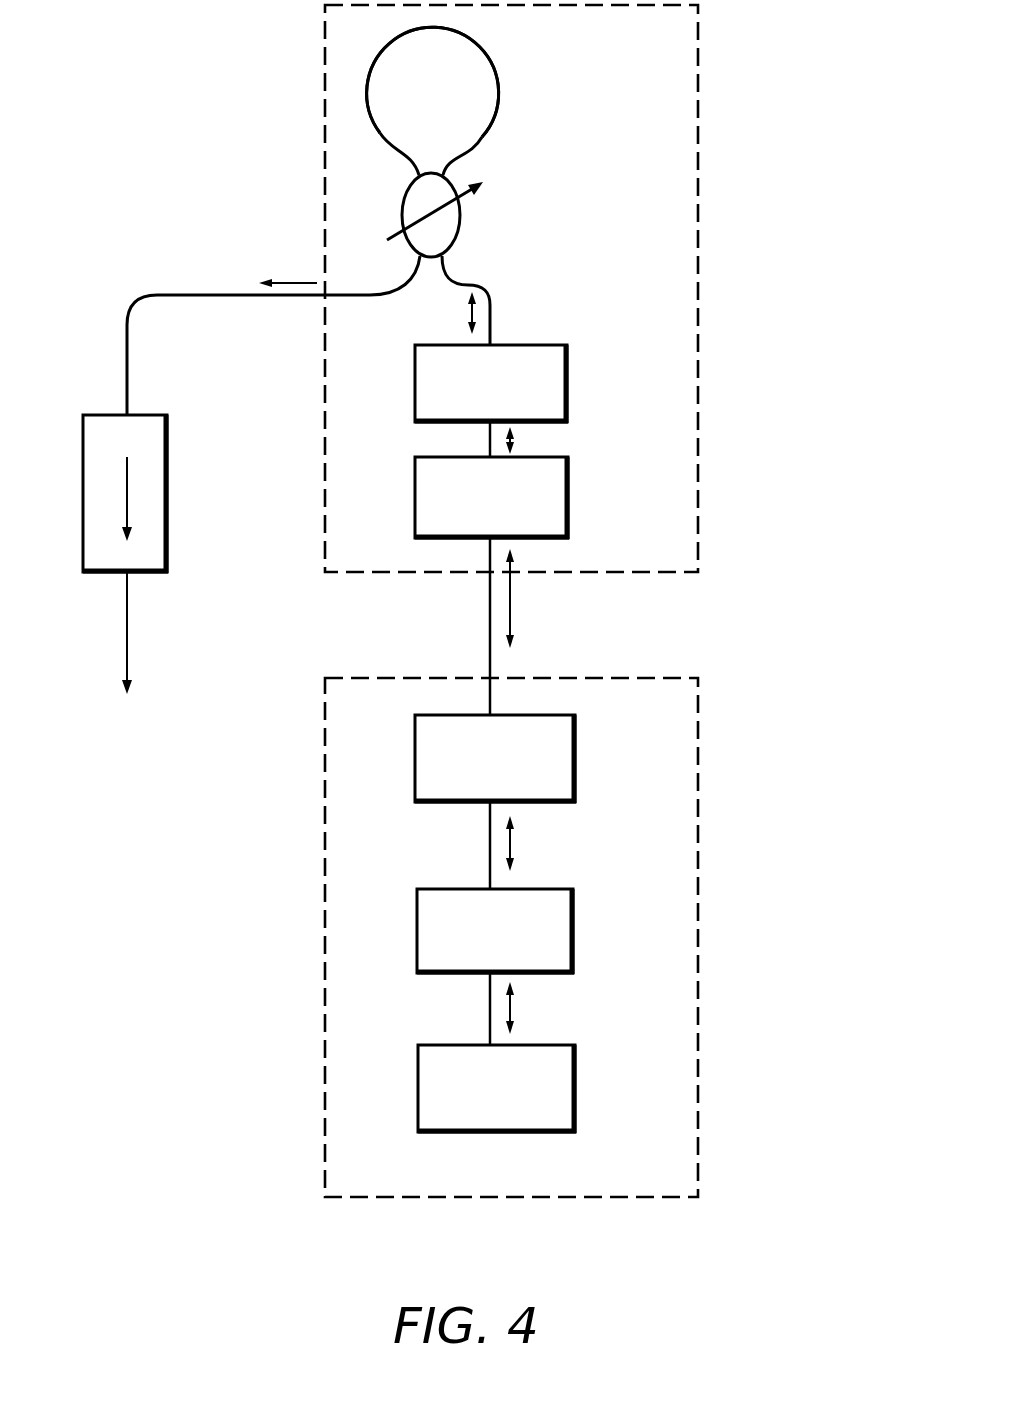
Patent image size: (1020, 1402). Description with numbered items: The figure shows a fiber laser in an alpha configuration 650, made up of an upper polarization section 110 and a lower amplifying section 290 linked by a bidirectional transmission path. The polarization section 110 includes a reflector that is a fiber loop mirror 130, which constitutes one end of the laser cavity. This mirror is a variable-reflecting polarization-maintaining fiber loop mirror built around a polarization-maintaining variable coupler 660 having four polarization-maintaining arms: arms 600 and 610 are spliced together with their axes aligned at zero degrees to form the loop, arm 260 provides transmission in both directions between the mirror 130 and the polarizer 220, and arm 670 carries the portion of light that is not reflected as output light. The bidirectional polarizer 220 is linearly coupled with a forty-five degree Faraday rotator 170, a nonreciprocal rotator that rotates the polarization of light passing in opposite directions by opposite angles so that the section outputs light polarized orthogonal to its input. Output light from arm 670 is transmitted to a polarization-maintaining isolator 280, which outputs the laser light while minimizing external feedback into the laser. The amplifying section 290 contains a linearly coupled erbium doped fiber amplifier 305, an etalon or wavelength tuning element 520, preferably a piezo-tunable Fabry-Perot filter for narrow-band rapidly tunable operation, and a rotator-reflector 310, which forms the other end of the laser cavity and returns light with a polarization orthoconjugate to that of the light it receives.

The polarization section 110 is at (682, 272).
The amplifying section 290 is at (682, 863).
The polarization-maintaining arm 600 is at (363, 98).
The polarization-maintaining arm 610 is at (498, 92).
The fiber loop mirror 130 is at (508, 163).
The polarization-maintaining variable coupler 660 is at (460, 220).
The transmission means (polarization-maintaining arm) 260 is at (490, 295).
The polarization-maintaining arm 670 is at (374, 297).
The polarization-maintaining isolator 280 is at (157, 515).
The bidirectional polarizer 220 is at (557, 373).
The nonreciprocal rotator 170 is at (553, 485).
The alpha configuration 650 is at (700, 623).
The erbium doped fiber amplifier 305 is at (557, 743).
The wavelength tuning element 520 is at (553, 905).
The rotator-reflector 310 is at (555, 1073).